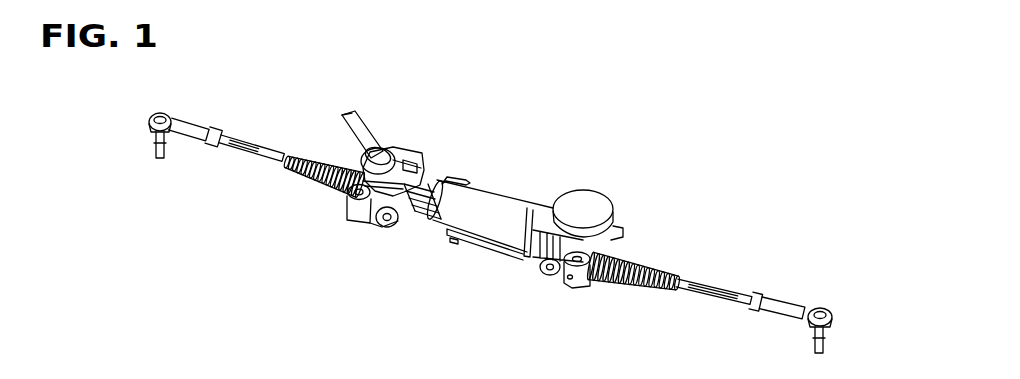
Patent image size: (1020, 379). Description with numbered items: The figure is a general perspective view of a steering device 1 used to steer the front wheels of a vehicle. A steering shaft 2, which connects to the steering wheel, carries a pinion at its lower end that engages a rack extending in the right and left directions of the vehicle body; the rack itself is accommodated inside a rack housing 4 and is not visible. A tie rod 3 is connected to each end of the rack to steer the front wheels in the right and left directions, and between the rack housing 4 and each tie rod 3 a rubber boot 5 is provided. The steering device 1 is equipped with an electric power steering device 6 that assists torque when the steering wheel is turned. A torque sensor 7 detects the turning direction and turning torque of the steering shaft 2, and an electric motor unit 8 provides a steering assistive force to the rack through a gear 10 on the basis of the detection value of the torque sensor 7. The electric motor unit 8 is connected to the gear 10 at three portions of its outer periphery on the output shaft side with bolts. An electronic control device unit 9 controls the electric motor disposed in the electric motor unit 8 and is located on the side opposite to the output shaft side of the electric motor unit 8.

The steering device 1 is at (467, 252).
The steering shaft 2 is at (366, 130).
The tie rod 3 is at (196, 128).
The rack housing 4 is at (588, 278).
The rubber boot 5 is at (310, 158).
The electric power steering device 6 is at (498, 118).
The torque sensor 7 is at (416, 152).
The electric motor unit 8 is at (503, 203).
The electronic control device unit (ECU) 9 is at (450, 180).
The gear 10 is at (584, 193).